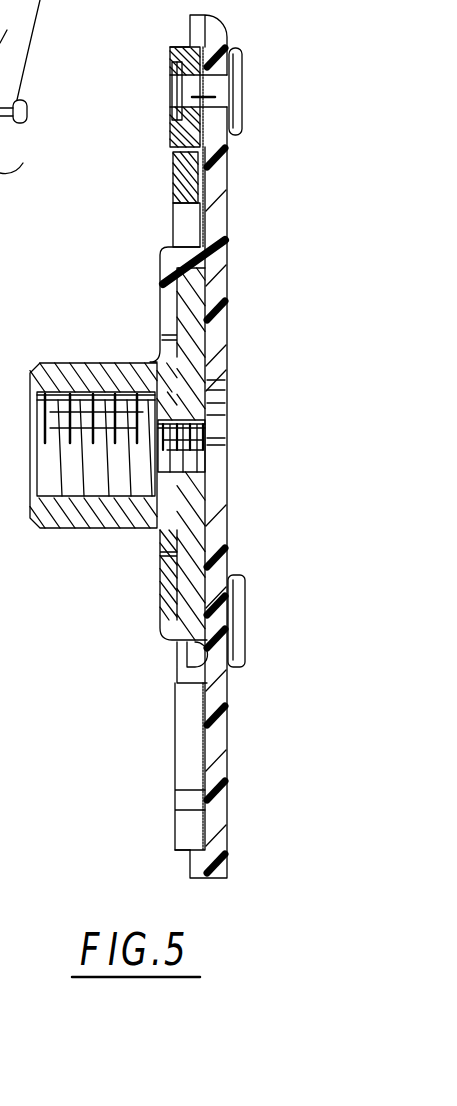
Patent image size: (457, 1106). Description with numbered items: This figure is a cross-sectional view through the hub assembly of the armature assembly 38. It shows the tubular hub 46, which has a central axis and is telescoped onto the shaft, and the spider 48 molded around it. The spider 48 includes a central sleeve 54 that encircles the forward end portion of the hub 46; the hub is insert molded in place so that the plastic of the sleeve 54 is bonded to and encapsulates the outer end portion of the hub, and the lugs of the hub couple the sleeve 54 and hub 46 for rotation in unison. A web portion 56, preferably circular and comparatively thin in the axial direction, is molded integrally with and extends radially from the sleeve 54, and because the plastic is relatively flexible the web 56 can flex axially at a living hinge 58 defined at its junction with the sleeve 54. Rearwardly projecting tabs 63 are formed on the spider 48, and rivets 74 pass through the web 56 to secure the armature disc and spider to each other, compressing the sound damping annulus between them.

The armature assembly 38 is at (124, 194).
The tubular hub 46 is at (73, 368).
The spider 48 is at (236, 260).
The central sleeve 54 is at (166, 308).
The web portion 56 is at (214, 202).
The living hinge 58 is at (200, 238).
The tabs 63 is at (190, 673).
The rivets 74 is at (28, 108).